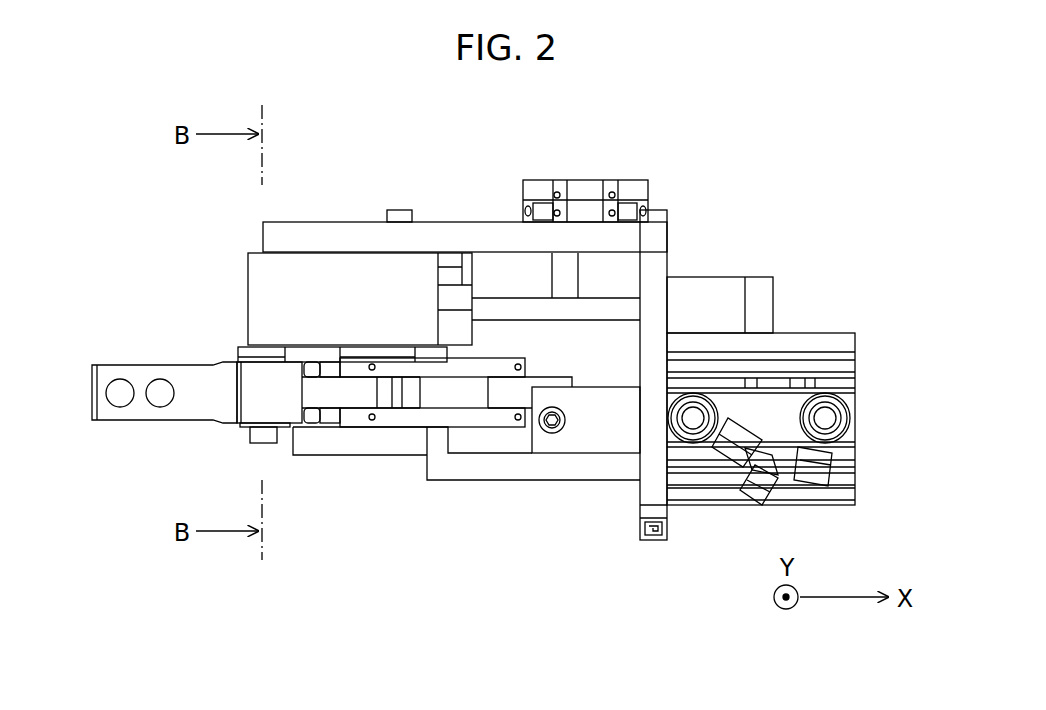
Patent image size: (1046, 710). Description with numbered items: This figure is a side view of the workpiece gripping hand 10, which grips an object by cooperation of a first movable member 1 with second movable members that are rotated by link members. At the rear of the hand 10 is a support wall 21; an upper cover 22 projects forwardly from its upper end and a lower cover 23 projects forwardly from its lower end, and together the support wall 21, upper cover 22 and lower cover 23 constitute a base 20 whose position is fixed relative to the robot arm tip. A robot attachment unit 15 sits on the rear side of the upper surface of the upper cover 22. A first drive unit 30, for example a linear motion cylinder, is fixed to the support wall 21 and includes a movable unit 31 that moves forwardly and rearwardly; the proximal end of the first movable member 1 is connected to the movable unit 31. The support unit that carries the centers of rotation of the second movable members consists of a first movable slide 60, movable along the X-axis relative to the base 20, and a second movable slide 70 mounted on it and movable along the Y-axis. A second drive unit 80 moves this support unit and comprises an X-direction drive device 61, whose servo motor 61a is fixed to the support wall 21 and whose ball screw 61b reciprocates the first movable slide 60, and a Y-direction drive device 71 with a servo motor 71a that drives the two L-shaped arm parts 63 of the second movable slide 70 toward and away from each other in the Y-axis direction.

The first movable member 1 is at (538, 378).
The workpiece gripping hand 10 is at (815, 176).
The robot attachment unit 15 is at (632, 180).
The base 20 is at (491, 355).
The support wall 21 is at (638, 492).
The upper cover 22 is at (348, 232).
The lower cover 23 is at (472, 480).
The first drive unit 30 is at (861, 466).
The movable unit 31 is at (592, 438).
The first movable slide 60 is at (449, 353).
The X-direction drive device 61 is at (753, 258).
The servo motor 61a is at (774, 302).
The ball screw 61b is at (610, 322).
The arm parts 63 is at (378, 283).
The second movable slide 70 is at (311, 244).
The Y-direction drive device 71 is at (504, 250).
The servo motor 71a is at (568, 273).
The second drive unit 80 is at (612, 282).